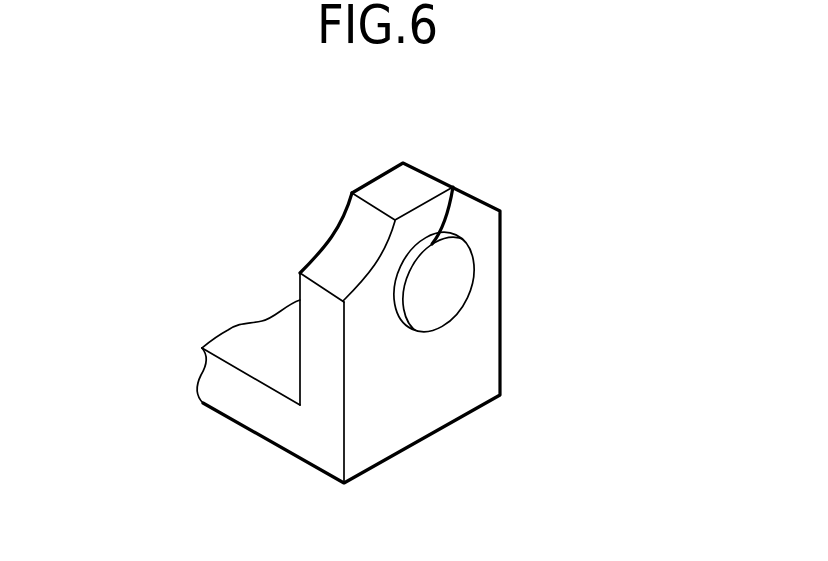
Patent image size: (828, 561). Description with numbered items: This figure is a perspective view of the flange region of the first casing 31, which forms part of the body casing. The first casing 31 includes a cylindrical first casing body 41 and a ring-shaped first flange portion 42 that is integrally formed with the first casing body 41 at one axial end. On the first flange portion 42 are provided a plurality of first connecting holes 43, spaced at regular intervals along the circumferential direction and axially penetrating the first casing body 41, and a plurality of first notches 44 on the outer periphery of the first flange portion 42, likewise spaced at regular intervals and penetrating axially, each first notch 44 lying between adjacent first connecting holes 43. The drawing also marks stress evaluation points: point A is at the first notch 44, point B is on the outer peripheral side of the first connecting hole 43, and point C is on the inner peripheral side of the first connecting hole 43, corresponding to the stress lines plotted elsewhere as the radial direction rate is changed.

The first casing 31 is at (353, 300).
The first casing body 41 is at (225, 385).
The first flange portion 42 is at (472, 360).
The first connecting hole 43 is at (472, 252).
The first notch 44 is at (348, 255).
The stress point of first notch A is at (300, 273).
The outer peripheral side of first connecting hole B is at (456, 191).
The inner peripheral side of first connecting hole C is at (438, 325).